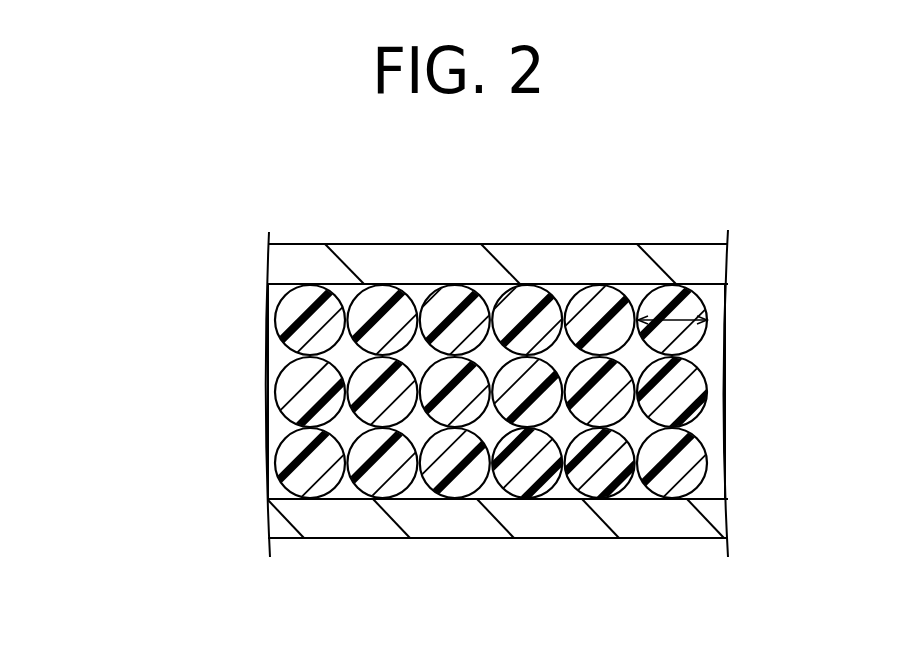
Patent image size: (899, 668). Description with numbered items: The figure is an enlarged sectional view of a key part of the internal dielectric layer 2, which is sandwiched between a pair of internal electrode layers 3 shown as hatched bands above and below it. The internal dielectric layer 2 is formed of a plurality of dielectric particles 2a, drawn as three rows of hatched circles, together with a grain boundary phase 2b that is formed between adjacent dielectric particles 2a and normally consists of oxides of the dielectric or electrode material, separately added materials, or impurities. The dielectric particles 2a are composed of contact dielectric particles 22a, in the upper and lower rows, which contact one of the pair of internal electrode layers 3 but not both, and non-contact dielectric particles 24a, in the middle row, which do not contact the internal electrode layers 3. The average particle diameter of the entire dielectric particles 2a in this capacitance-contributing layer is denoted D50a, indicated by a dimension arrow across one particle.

The internal dielectric layer 2 is at (68, 368).
The dielectric particles 2a is at (141, 313).
The contact dielectric particles 22a is at (290, 310).
The non-contact dielectric particles 24a is at (290, 396).
The grain boundary phase 2b is at (344, 425).
The internal electrode layers 3 is at (688, 262).
The average particle diameter of the dielectric particles in the internal dielectric D50a is at (660, 320).